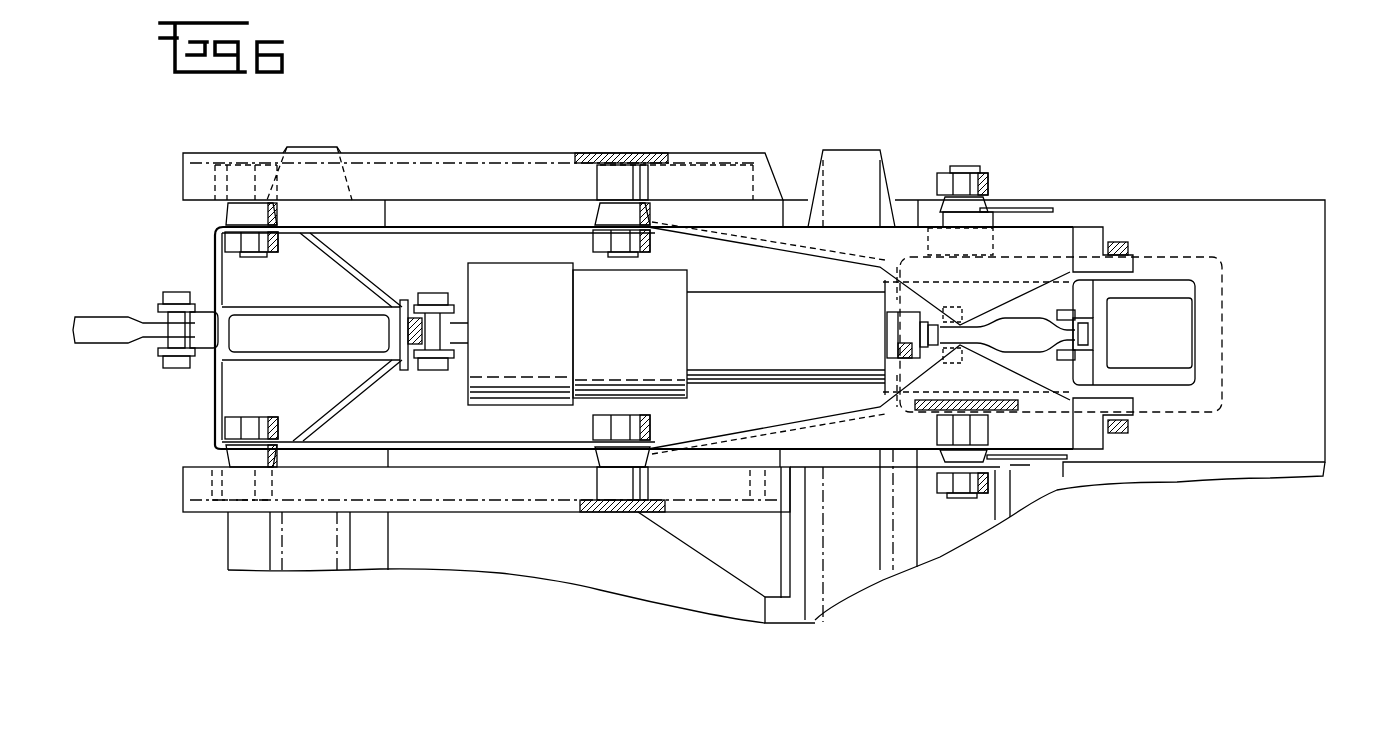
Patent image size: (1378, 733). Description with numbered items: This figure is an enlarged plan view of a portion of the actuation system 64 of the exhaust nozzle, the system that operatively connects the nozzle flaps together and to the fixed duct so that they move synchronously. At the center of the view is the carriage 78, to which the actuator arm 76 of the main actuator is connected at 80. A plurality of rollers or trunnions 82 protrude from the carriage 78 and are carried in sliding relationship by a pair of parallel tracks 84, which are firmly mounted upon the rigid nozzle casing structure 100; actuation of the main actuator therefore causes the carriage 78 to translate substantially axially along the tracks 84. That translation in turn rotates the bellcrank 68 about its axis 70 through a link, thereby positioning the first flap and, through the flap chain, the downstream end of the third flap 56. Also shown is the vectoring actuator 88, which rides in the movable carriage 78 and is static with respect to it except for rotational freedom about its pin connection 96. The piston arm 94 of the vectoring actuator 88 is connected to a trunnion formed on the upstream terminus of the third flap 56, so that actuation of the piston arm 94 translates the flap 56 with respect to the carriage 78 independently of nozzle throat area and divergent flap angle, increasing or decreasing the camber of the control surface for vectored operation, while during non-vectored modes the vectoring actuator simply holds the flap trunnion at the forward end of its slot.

The third flap 56 is at (1312, 404).
The actuation system 64 is at (178, 391).
The bellcrank 68 is at (1020, 332).
The bellcrank axis 70 is at (1133, 395).
The actuator arm 76 is at (112, 318).
The carriage 78 is at (499, 232).
The connection of actuator arm to carriage 80 is at (165, 342).
The rollers or trunnions 82 is at (248, 178).
The parallel tracks 84 is at (472, 516).
The vectoring actuator 88 is at (530, 340).
The piston arm 94 is at (915, 333).
The pin connection 96 is at (428, 336).
The rigid nozzle casing structure 100 is at (365, 572).